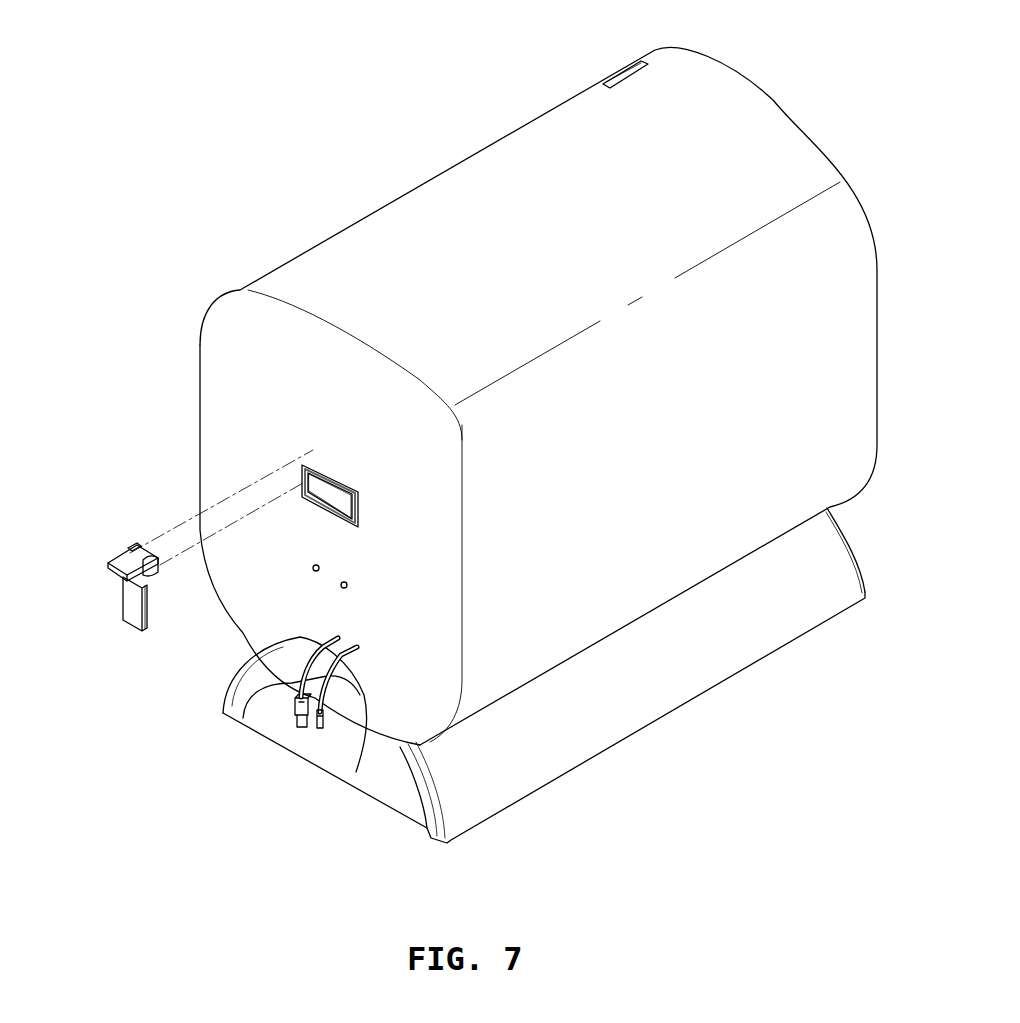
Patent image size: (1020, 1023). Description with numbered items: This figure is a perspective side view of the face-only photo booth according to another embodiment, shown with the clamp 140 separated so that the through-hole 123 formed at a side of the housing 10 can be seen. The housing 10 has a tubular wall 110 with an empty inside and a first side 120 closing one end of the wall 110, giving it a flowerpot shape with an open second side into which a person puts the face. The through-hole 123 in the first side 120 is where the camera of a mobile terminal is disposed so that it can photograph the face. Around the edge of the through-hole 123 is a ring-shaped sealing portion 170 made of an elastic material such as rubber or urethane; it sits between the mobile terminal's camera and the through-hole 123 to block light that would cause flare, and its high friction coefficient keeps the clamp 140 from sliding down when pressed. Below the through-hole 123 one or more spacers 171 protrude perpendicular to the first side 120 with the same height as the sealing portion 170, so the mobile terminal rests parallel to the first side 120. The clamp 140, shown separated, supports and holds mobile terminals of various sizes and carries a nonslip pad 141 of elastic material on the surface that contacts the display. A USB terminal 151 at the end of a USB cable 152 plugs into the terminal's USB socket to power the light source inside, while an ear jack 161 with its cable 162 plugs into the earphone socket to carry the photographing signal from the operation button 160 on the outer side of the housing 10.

The housing 10 is at (428, 178).
The tubular wall 110 is at (501, 198).
The first side 120 is at (245, 410).
The through-hole 123 is at (333, 493).
The clamp 140 is at (132, 598).
The nonslip pad 141 is at (143, 619).
The USB terminal 151 is at (295, 713).
The USB cable 152 is at (285, 678).
The operation button 160 is at (630, 68).
The ear jack 161 is at (319, 716).
The cable 162 is at (325, 670).
The ring-shaped sealing portion 170 is at (300, 478).
The spacer 171 is at (344, 587).